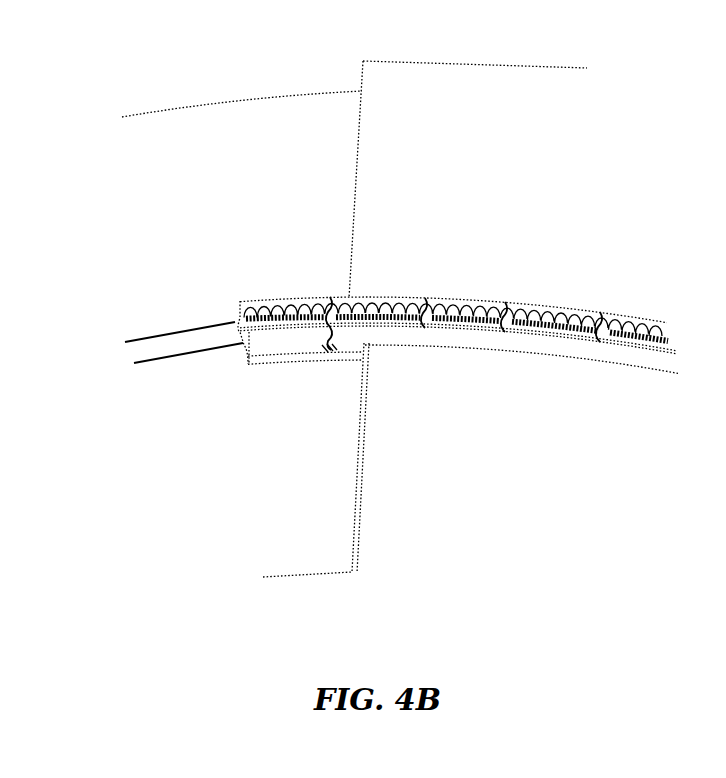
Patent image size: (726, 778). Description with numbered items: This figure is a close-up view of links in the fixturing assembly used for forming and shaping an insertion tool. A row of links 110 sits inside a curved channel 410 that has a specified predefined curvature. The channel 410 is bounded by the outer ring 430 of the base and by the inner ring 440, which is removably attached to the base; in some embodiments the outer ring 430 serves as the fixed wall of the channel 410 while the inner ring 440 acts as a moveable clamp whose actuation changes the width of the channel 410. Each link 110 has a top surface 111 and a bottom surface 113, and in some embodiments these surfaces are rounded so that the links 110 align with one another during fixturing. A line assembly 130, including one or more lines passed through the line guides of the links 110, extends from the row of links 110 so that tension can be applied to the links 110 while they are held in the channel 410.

The outer ring 430 is at (519, 82).
The channel 410 is at (447, 298).
The top surface 111 is at (300, 300).
The link 110 is at (303, 345).
The bottom surface 113 is at (268, 360).
The line assembly 130 is at (137, 338).
The inner ring 440 is at (387, 493).